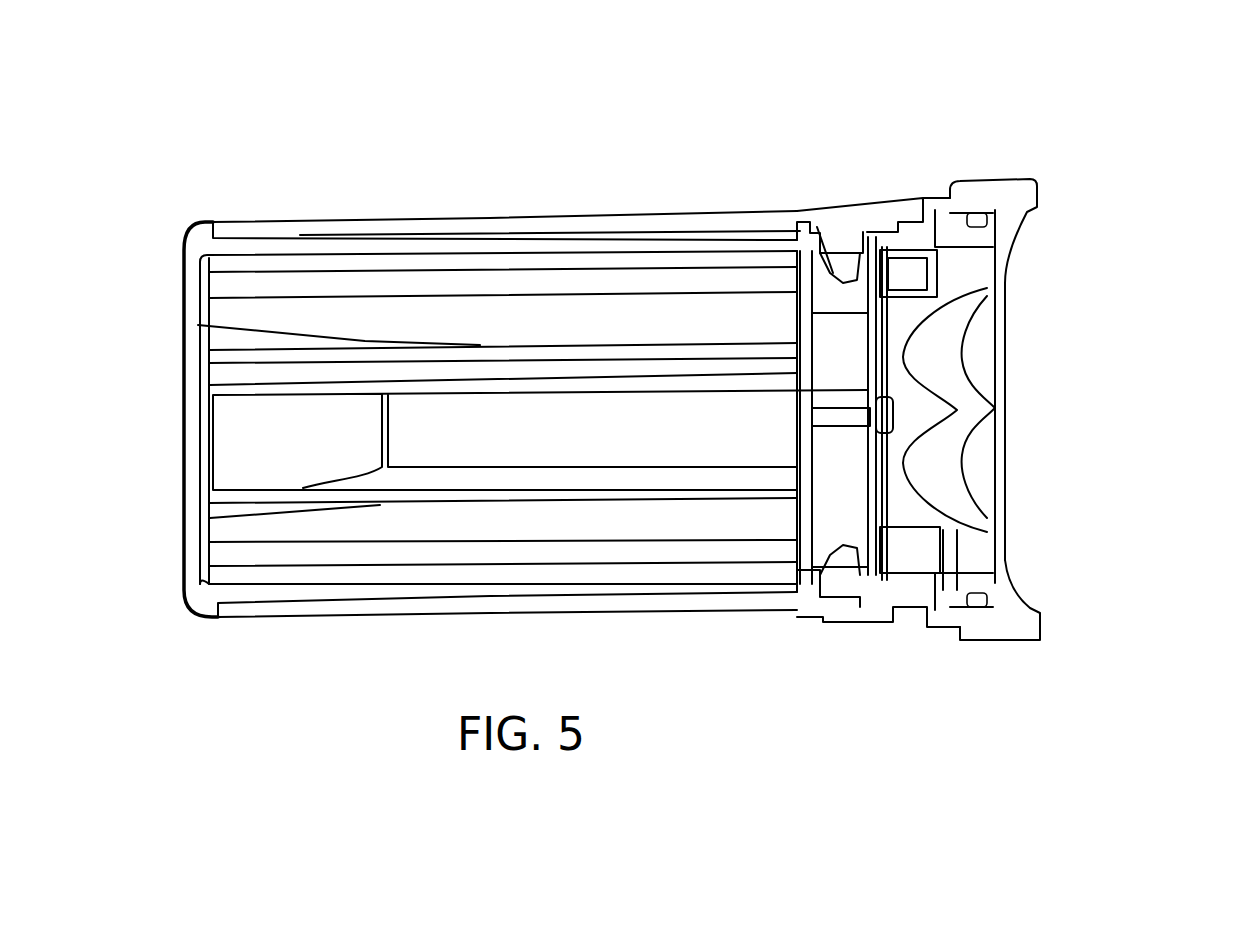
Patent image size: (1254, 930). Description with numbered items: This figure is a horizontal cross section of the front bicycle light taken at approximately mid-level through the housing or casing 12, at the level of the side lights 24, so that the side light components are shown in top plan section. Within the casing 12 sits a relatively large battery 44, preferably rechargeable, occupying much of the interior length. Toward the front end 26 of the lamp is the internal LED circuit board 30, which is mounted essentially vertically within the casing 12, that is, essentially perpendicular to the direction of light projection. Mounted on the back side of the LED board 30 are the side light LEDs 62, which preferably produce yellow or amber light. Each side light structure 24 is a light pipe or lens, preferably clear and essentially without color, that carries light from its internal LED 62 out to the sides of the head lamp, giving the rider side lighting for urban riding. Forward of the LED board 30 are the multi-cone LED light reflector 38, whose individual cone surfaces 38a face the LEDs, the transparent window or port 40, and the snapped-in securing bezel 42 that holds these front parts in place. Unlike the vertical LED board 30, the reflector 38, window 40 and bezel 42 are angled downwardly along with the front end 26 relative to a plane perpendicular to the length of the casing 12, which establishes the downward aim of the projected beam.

The housing or casing 12 is at (480, 220).
The side lights 24 is at (875, 197).
The front end 26 is at (1038, 188).
The LED circuit board 30 is at (860, 382).
The multi-cone LED light reflector 38 is at (1020, 410).
The diaphragm curved portions 38a is at (968, 320).
The transparent window or port 40 is at (1005, 338).
The snapped-in securing bezel 42 is at (1027, 217).
The battery 44 is at (552, 443).
The side light LEDs 62 is at (858, 285).